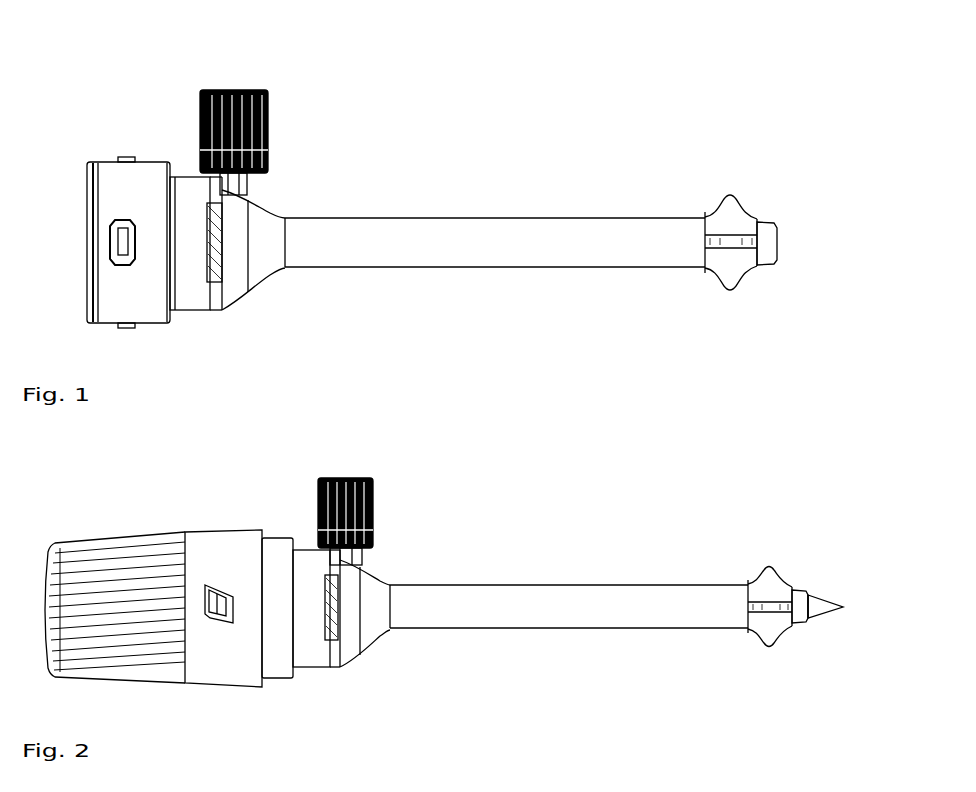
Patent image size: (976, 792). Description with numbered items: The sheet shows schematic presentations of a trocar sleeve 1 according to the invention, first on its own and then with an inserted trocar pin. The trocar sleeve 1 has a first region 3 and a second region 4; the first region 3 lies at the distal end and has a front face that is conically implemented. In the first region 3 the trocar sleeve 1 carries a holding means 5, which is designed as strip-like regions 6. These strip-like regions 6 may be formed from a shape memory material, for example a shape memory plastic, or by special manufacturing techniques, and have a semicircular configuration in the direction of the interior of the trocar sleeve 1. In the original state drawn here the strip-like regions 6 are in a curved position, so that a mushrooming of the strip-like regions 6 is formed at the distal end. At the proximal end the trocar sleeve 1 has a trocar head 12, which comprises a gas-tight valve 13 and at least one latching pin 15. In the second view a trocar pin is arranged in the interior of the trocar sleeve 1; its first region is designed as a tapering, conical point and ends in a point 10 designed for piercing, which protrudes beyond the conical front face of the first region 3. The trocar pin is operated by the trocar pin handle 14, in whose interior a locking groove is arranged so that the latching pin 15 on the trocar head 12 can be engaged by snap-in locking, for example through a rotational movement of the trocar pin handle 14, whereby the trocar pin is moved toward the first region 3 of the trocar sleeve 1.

In FIG. 1, the trocar sleeve 1 is at (505, 163).
In FIG. 2, the trocar sleeve 1 is at (563, 521).
In FIG. 1, the first region 3 is at (766, 215).
In FIG. 2, the first region 3 is at (800, 583).
In FIG. 1, the second region 4 is at (345, 218).
In FIG. 2, the second region 4 is at (569, 606).
In FIG. 1, the holding means 5 is at (708, 168).
In FIG. 2, the holding means 5 is at (746, 551).
In FIG. 1, the strip-like regions 6 is at (728, 290).
In FIG. 2, the strip-like regions 6 is at (768, 650).
In FIG. 2, the point 10 is at (812, 622).
In FIG. 1, the trocar head 12 is at (187, 180).
In FIG. 2, the trocar head 12 is at (297, 547).
In FIG. 1, the gas-tight valve 13 is at (254, 98).
In FIG. 2, the gas-tight valve 13 is at (348, 478).
In FIG. 2, the trocar pin handle 14 is at (145, 535).
In FIG. 1, the latching pin 15 is at (125, 158).